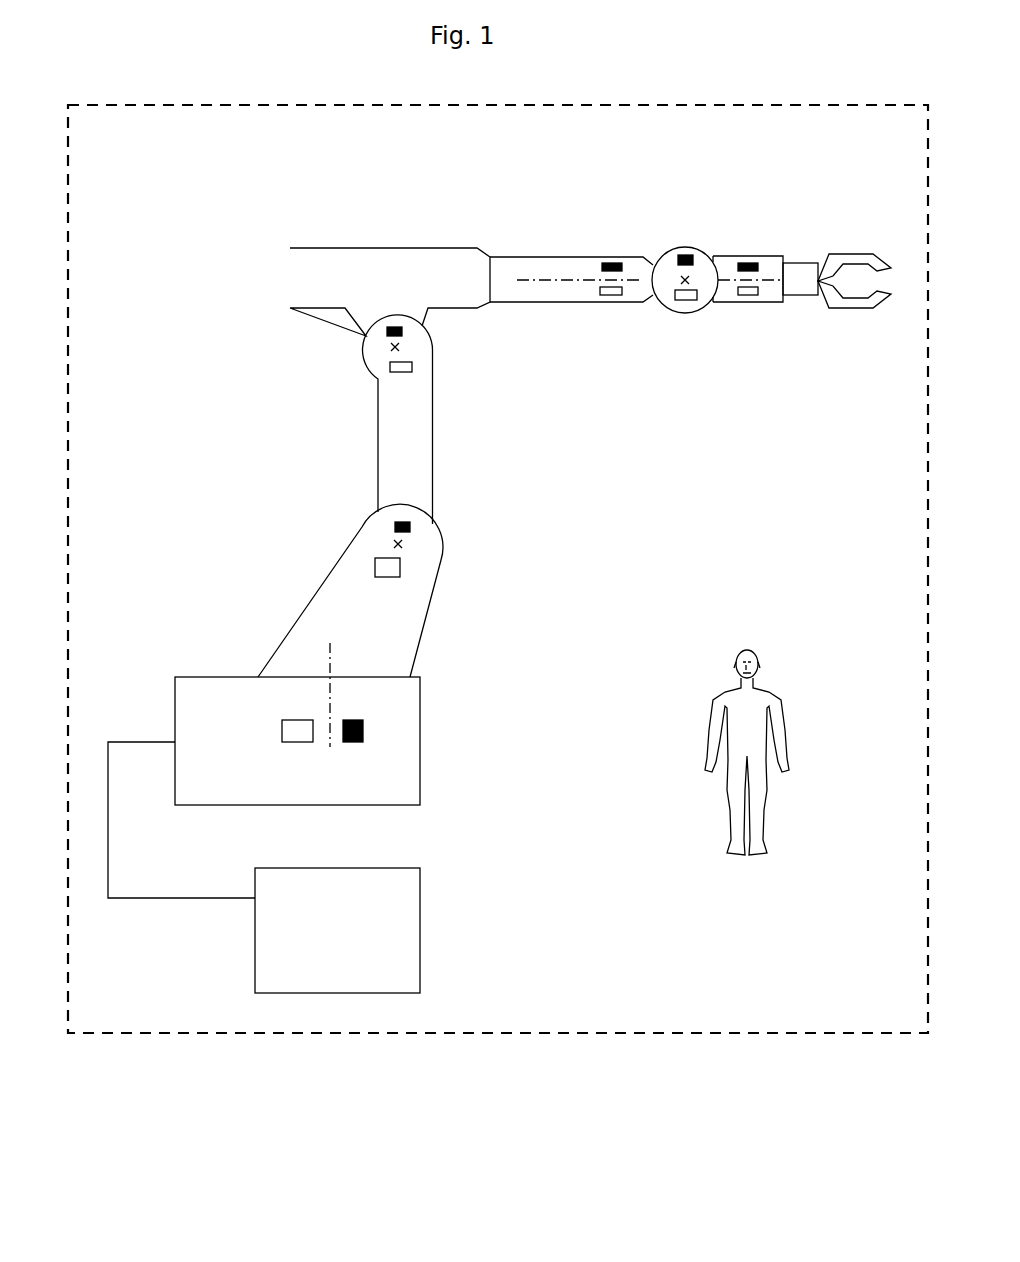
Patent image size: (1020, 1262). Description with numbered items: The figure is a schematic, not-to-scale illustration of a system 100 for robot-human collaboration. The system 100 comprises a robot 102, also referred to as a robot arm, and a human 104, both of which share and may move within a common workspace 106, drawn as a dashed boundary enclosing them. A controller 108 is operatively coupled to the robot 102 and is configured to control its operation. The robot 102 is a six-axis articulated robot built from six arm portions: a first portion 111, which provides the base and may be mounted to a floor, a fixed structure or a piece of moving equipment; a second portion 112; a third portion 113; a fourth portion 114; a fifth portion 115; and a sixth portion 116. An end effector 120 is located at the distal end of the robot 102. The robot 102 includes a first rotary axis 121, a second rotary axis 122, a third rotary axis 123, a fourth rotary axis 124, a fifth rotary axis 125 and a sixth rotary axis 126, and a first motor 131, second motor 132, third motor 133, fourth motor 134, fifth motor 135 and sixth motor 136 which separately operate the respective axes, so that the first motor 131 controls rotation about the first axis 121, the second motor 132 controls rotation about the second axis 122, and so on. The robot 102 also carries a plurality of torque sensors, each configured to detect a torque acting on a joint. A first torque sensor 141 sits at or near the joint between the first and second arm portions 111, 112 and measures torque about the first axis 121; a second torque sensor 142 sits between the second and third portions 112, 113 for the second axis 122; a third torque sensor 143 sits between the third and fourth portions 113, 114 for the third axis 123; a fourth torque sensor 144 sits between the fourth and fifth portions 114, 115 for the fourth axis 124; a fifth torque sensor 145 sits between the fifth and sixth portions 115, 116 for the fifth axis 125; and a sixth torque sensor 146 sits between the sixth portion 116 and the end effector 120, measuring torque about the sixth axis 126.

The system 100 is at (498, 613).
The robot 102 is at (275, 212).
The human 104 is at (763, 820).
The common workspace 106 is at (793, 1035).
The controller 108 is at (422, 914).
The first portion 111 is at (422, 771).
The second portion 112 is at (414, 617).
The third portion 113 is at (414, 432).
The fourth portion 114 is at (428, 266).
The fifth portion 115 is at (614, 303).
The sixth portion 116 is at (735, 303).
The end effector 120 is at (892, 243).
The first rotary axis 121 is at (328, 656).
The second rotary axis 122 is at (400, 543).
The third rotary axis 123 is at (392, 350).
The fourth rotary axis 124 is at (548, 277).
The fifth rotary axis 125 is at (700, 250).
The sixth rotary axis 126 is at (772, 300).
The first motor 131 is at (298, 742).
The second motor 132 is at (375, 565).
The third motor 133 is at (413, 366).
The fourth motor 134 is at (599, 292).
The fifth motor 135 is at (683, 312).
The sixth motor 136 is at (752, 303).
The first torque sensor 141 is at (363, 732).
The second torque sensor 142 is at (403, 522).
The third torque sensor 143 is at (387, 330).
The fourth torque sensor 144 is at (612, 261).
The fifth torque sensor 145 is at (684, 254).
The sixth torque sensor 146 is at (748, 261).